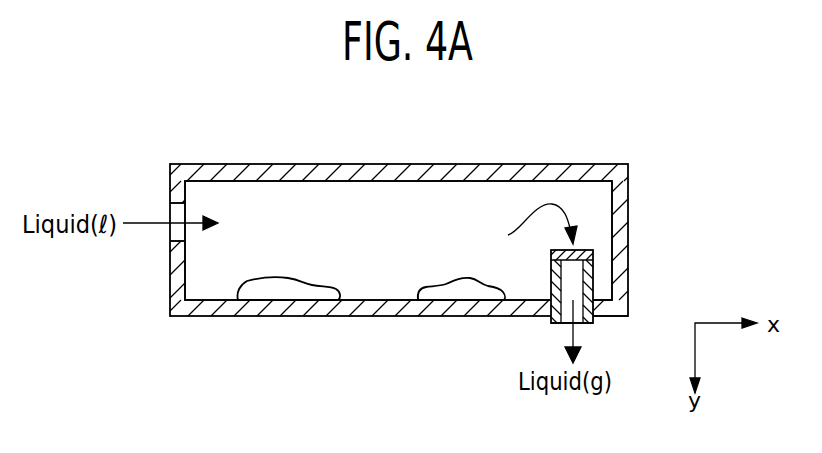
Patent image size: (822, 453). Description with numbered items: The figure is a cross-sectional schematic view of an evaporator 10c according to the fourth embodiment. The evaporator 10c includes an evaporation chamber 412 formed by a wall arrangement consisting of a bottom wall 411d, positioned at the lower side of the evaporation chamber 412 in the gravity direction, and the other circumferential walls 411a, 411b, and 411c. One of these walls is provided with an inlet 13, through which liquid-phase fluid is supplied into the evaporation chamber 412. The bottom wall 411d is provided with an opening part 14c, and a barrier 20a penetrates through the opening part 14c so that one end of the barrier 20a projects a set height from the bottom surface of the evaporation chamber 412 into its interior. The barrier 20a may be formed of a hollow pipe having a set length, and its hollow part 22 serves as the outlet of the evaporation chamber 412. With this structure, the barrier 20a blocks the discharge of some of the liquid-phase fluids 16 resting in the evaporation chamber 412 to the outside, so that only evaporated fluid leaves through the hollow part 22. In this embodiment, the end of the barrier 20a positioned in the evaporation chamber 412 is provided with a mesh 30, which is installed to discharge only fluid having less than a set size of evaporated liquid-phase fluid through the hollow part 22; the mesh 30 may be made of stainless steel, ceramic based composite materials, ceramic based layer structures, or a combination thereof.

The evaporator 10c is at (250, 128).
The inlet 13 is at (178, 210).
The circumferential wall 411a is at (170, 268).
The circumferential wall 411b is at (618, 190).
The circumferential wall 411c is at (543, 177).
The bottom wall 411d is at (383, 307).
The evaporation chamber 412 is at (410, 202).
The liquid-phase fluid 16 is at (285, 290).
The mesh 30 is at (595, 253).
The hollow part 22 is at (566, 318).
The barrier 20a is at (592, 324).
The opening part 14c is at (602, 313).